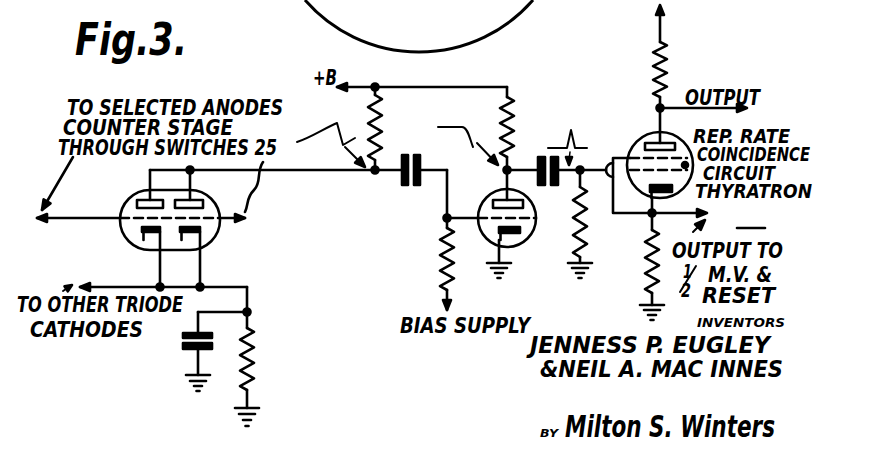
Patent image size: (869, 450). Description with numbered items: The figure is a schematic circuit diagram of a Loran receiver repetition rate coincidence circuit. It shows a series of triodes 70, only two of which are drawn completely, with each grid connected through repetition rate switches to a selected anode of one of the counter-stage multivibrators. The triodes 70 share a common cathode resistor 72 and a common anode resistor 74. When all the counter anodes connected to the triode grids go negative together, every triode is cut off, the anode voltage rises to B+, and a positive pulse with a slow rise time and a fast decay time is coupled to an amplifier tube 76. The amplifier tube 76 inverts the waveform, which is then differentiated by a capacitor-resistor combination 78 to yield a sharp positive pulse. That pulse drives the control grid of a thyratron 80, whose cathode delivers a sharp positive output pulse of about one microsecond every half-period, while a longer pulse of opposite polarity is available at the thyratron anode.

The triodes 70 is at (137, 248).
The common cathode resistor 72 is at (260, 343).
The common anode resistor 74 is at (398, 128).
The amplifier tube 76 is at (522, 250).
The capacitor-resistor combination 78 is at (568, 188).
The thyratron 80 is at (685, 129).